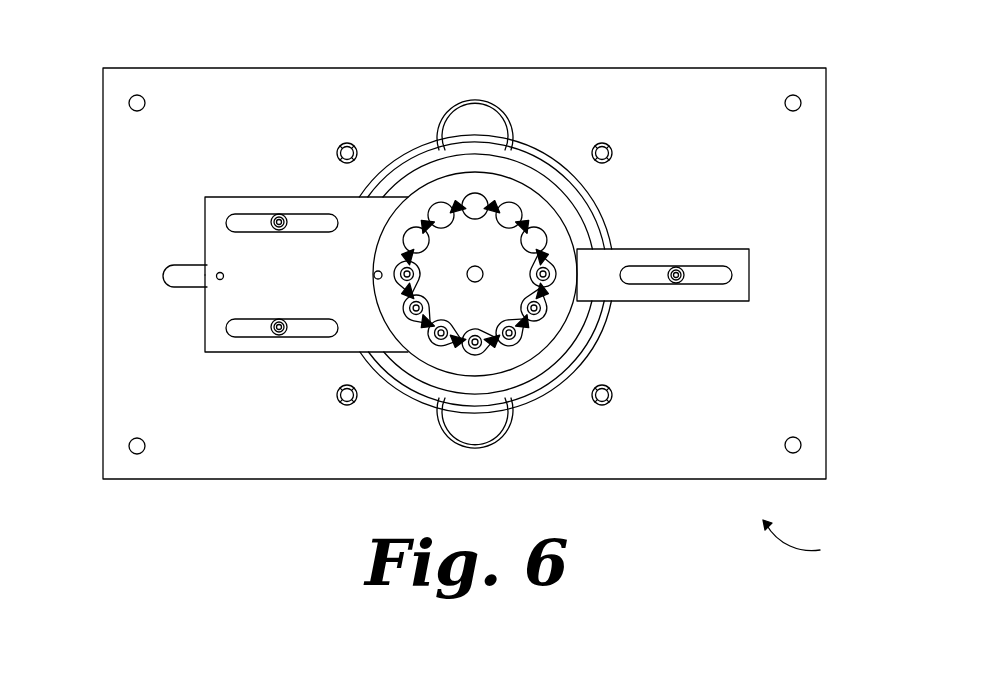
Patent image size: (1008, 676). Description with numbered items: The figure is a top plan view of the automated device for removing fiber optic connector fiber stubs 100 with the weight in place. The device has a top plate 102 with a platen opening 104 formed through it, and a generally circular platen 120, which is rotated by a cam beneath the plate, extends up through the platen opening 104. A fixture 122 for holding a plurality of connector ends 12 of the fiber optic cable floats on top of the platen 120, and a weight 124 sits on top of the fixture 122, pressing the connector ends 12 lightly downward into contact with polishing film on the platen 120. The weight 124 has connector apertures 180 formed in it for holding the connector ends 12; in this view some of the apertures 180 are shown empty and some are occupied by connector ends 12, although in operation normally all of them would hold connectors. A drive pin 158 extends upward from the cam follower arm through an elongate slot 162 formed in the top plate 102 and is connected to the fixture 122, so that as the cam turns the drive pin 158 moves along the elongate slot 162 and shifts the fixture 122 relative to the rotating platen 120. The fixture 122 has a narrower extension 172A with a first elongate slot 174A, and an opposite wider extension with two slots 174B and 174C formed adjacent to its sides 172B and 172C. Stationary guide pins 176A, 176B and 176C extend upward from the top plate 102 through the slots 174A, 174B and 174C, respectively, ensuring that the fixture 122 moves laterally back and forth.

The automated device for removing fiber optic connector fiber stubs 100 is at (813, 541).
The top plate 102 is at (532, 97).
The platen opening 104 is at (398, 152).
The connector ends 12 is at (440, 212).
The platen 120 is at (585, 208).
The fixture 122 is at (377, 342).
The weight 124 is at (512, 192).
The connector apertures 180 is at (553, 273).
The narrower extension 172A is at (707, 295).
The side 172B is at (247, 347).
The side 172C is at (247, 205).
The first elongate slot 174A is at (725, 272).
The slot 174B is at (313, 330).
The slot 174C is at (315, 223).
The stationary guide pin 176A is at (673, 280).
The stationary guide pin 176B is at (272, 328).
The stationary guide pin 176C is at (272, 223).
The elongate slot 162 is at (170, 270).
The drive pin 158 is at (216, 277).